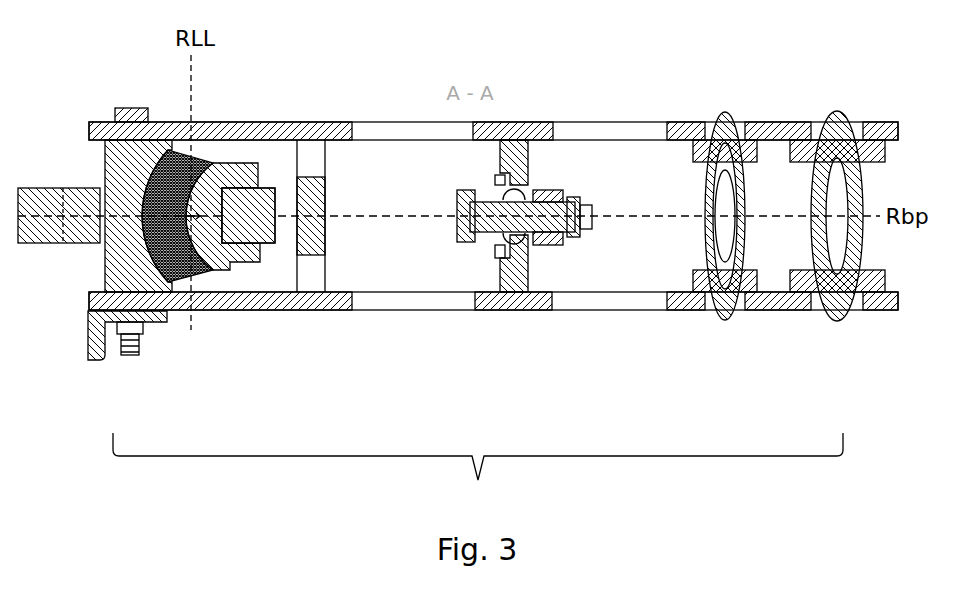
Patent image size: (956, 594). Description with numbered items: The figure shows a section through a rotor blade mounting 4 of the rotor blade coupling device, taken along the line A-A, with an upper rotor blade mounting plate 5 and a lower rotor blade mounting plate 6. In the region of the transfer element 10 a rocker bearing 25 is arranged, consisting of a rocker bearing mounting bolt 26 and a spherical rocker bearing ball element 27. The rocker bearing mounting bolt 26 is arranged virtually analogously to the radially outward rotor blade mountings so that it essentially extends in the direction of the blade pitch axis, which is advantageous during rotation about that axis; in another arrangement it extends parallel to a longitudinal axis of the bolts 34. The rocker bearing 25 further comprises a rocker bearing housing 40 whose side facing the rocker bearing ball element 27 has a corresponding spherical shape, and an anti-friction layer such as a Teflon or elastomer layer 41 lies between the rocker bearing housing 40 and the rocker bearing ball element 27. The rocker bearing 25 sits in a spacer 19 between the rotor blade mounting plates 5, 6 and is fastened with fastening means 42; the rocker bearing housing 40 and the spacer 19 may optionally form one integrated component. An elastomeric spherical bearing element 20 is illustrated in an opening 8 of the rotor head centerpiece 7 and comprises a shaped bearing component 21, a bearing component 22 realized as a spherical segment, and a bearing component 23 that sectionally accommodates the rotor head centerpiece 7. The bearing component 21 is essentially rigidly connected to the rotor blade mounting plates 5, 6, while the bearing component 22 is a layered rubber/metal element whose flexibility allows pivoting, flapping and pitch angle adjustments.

The rotor blade mounting 4 is at (478, 469).
The upper rotor blade mounting plate 5 is at (316, 128).
The lower rotor blade mounting plate 6 is at (323, 307).
The rotor head centerpiece 7 is at (47, 221).
The opening 8 is at (85, 228).
The transfer element 10 is at (457, 193).
The spacer 19 is at (515, 282).
The elastomeric spherical bearing element 20 is at (154, 176).
The shaped bearing component 21 is at (130, 173).
The bearing component 22 is at (169, 150).
The bearing component 23 is at (222, 187).
The rocker bearing 25 is at (482, 253).
The rocker bearing mounting bolt 26 is at (528, 200).
The rocker bearing ball element 27 is at (497, 192).
The bolts 34 is at (730, 307).
The rocker bearing housing 40 is at (512, 192).
The elastomer layer 41 is at (540, 232).
The fastening means 42 is at (497, 250).